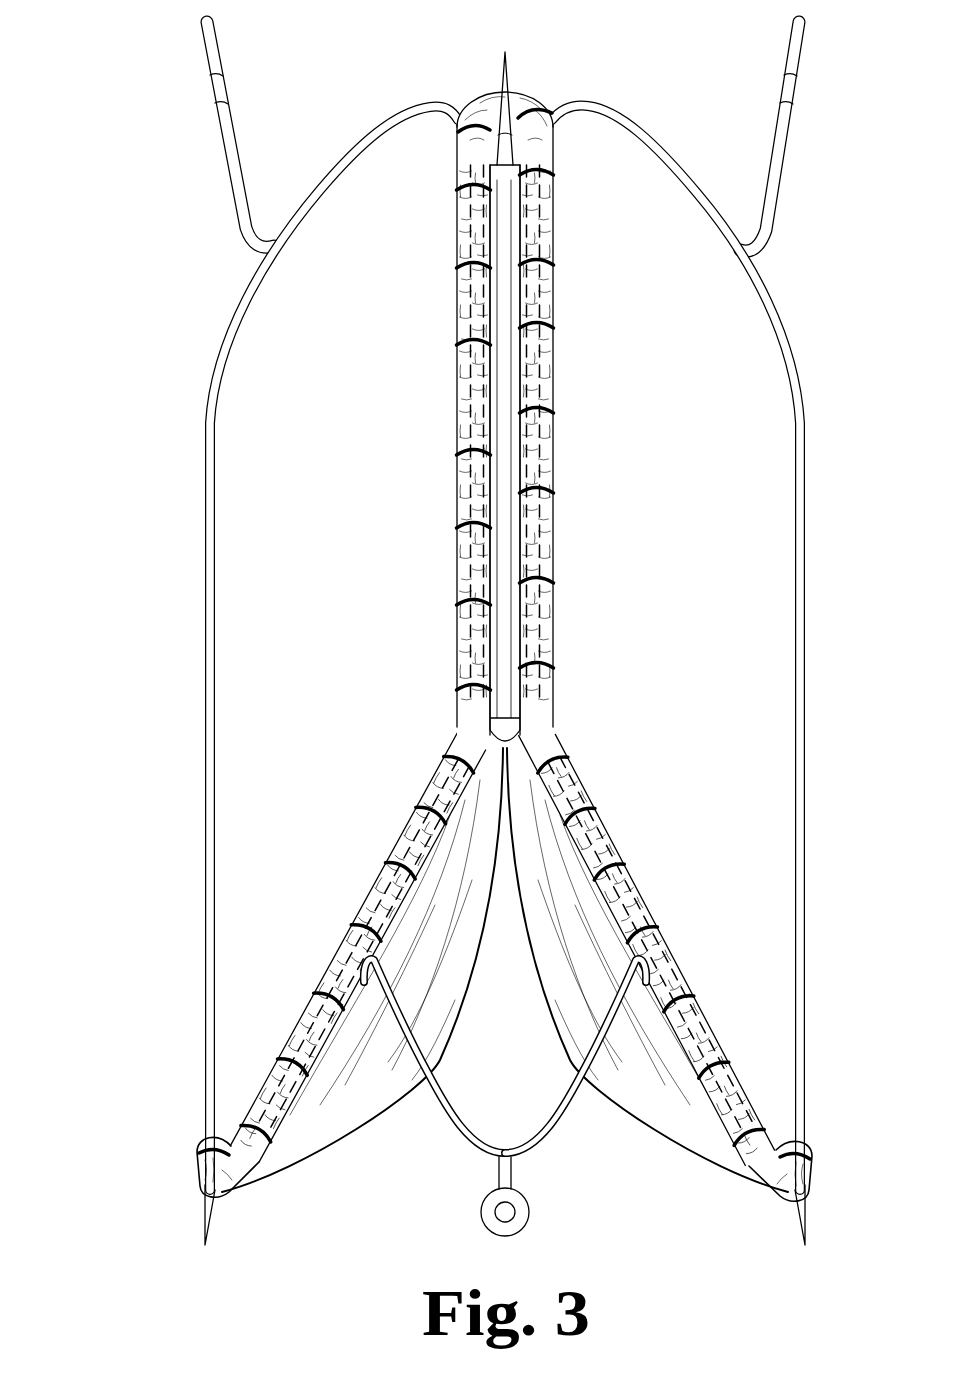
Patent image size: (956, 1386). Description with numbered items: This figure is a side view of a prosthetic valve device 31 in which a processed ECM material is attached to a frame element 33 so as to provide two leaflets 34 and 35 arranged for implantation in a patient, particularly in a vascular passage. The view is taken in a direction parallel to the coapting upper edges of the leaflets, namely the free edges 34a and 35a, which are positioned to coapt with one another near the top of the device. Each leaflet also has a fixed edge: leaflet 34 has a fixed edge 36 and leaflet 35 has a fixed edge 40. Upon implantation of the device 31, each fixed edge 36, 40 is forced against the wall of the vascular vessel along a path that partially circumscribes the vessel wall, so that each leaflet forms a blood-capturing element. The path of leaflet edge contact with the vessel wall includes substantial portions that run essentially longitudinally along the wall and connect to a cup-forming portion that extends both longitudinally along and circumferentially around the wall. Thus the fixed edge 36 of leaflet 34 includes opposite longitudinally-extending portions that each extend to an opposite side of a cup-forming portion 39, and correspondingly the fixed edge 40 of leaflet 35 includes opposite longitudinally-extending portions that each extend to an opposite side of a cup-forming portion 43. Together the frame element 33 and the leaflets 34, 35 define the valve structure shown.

The prosthetic valve device 31 is at (131, 85).
The frame element 33 is at (362, 126).
The leaflet 34 is at (348, 1120).
The leaflet 35 is at (650, 1112).
The free edge 34a is at (490, 122).
The free edge 35a is at (536, 112).
The fixed edge 36 is at (462, 456).
The fixed edge 40 is at (552, 442).
The cup-forming portion 39 is at (362, 908).
The cup-forming portion 43 is at (614, 848).